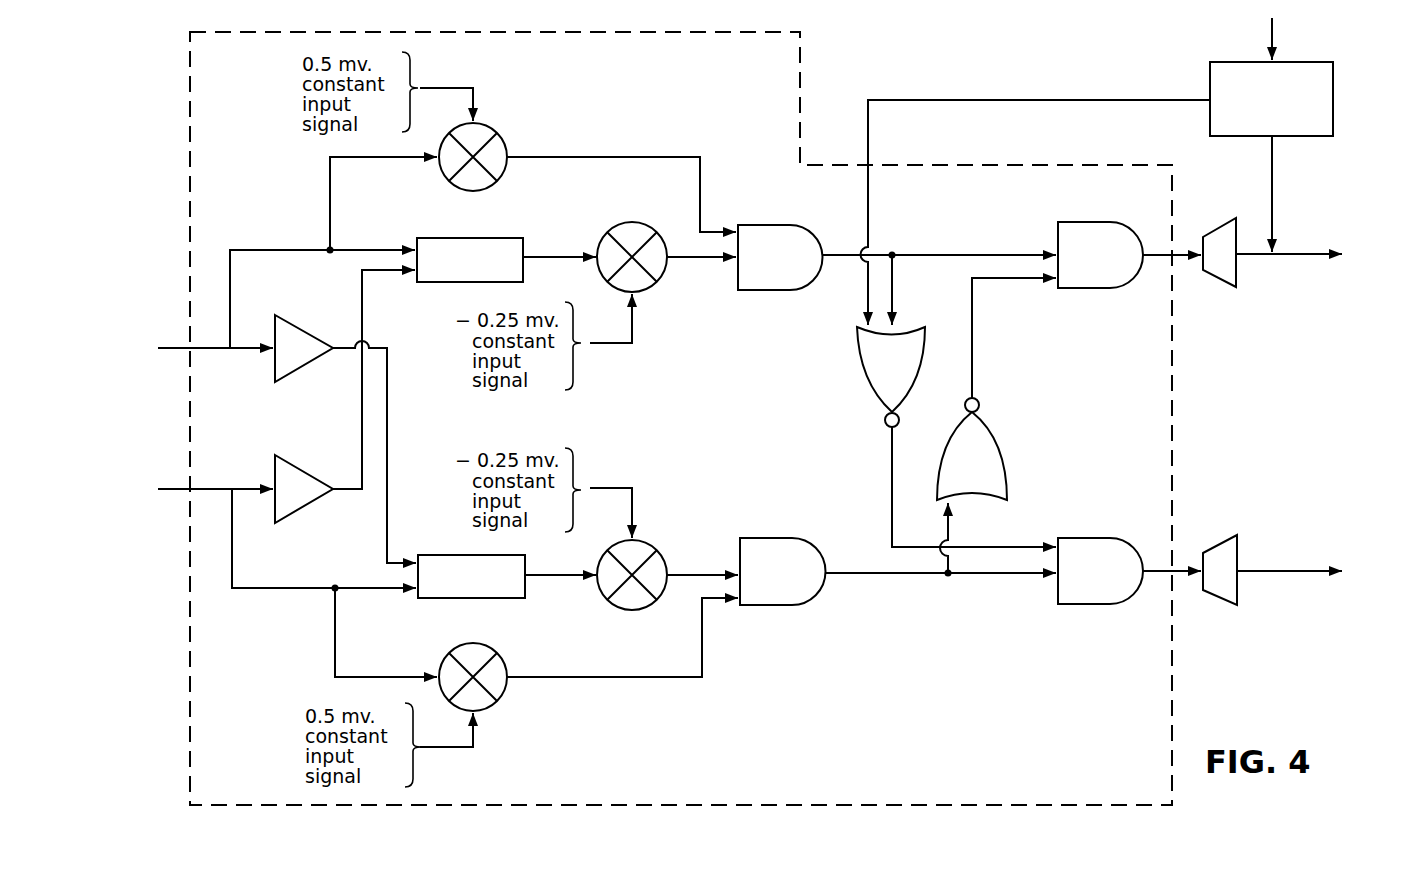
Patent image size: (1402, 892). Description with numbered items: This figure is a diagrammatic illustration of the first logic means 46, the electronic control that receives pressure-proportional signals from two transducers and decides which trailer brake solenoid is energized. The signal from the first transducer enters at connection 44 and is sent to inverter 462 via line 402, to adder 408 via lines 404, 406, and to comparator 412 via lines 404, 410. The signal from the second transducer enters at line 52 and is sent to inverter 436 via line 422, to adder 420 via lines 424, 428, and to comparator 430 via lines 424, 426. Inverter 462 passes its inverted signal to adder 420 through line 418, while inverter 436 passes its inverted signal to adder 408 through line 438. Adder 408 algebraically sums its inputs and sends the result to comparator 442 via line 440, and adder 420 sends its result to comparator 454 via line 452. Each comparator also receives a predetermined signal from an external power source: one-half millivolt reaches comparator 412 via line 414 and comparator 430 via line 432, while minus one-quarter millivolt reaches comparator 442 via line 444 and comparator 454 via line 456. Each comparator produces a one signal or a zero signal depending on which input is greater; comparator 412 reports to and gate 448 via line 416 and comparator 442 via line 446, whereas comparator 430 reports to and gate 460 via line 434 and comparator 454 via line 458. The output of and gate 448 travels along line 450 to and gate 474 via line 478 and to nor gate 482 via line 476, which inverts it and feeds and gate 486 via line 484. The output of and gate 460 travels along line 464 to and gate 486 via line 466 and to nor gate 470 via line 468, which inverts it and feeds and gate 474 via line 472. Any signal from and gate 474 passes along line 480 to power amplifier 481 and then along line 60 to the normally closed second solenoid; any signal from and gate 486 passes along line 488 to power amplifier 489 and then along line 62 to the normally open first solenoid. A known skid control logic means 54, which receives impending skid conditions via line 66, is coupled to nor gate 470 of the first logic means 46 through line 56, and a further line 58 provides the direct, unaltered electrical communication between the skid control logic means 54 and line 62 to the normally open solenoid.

The first logic means 46 is at (1174, 698).
The line 52 is at (172, 350).
The connection 44 is at (172, 491).
The line 422 is at (248, 350).
The line 402 is at (210, 487).
The line 424 is at (288, 249).
The line 426 is at (330, 183).
The line 428 is at (353, 249).
The comparator 430 is at (504, 143).
The line 432 is at (452, 88).
The line 434 is at (618, 155).
The adder 420 is at (458, 238).
The line 452 is at (555, 257).
The comparator 454 is at (640, 223).
The line 456 is at (608, 343).
The line 458 is at (688, 258).
The and gate 460 is at (794, 224).
The inverter 436 is at (311, 325).
The inverter 462 is at (310, 468).
The line 418 is at (362, 395).
The line 438 is at (388, 417).
The line 404 is at (300, 592).
The line 406 is at (353, 592).
The adder 408 is at (448, 600).
The line 410 is at (405, 672).
The comparator 412 is at (500, 693).
The line 414 is at (458, 750).
The line 416 is at (615, 680).
The line 440 is at (555, 575).
The comparator 442 is at (650, 606).
The line 444 is at (604, 488).
The line 446 is at (700, 575).
The and gate 448 is at (800, 607).
The line 450 is at (880, 577).
The line 464 is at (880, 247).
The line 466 is at (1005, 254).
The line 468 is at (895, 290).
The nor gate 470 is at (856, 372).
The line 472 is at (891, 473).
The and gate 474 is at (1110, 537).
The line 476 is at (950, 522).
The line 478 is at (998, 577).
The line 480 is at (1157, 580).
The power amplifier 481 is at (1238, 540).
The nor gate 482 is at (1003, 438).
The line 484 is at (975, 352).
The and gate 486 is at (1110, 221).
The line 488 is at (1158, 258).
The power amplifier 489 is at (1218, 285).
The line 56 is at (1062, 100).
The skid control logic means 54 is at (1333, 93).
The skid control output line 58 is at (1274, 183).
The line 62 is at (1303, 254).
The line 60 is at (1290, 571).
The line 66 is at (1274, 35).